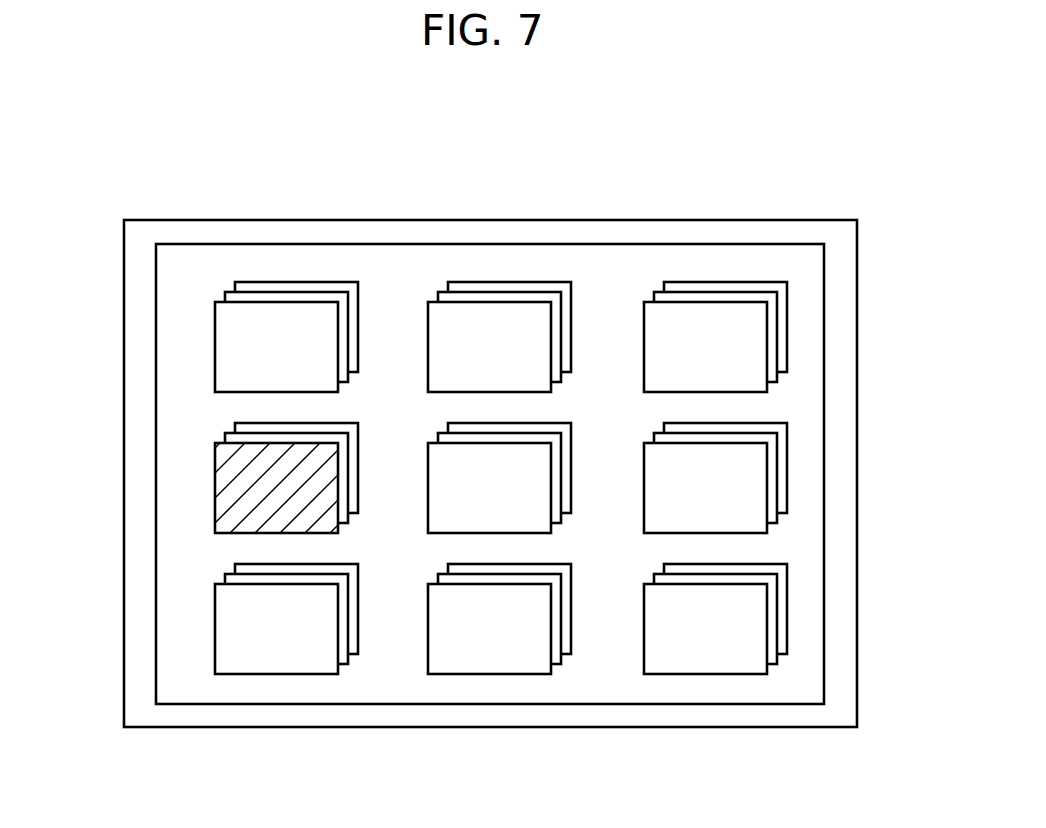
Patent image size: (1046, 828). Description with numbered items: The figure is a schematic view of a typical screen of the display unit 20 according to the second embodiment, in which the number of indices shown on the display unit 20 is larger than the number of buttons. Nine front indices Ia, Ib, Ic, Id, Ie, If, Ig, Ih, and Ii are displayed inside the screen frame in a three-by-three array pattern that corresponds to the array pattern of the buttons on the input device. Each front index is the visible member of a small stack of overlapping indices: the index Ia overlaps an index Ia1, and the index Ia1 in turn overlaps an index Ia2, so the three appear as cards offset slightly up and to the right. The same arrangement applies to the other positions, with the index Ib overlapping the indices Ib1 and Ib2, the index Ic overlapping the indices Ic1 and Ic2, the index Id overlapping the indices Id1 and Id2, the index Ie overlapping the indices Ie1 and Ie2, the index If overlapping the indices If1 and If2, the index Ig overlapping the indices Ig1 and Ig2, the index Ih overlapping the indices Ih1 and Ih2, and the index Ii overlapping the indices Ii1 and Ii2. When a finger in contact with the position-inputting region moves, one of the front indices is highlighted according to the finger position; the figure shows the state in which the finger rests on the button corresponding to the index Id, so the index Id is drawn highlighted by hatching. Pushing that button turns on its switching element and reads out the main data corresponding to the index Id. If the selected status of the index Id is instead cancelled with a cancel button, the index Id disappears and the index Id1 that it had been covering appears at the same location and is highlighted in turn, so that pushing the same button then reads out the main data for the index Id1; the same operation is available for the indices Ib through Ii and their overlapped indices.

The display unit 20 is at (866, 204).
The index Ia is at (247, 312).
The index Ia1 is at (283, 295).
The index Ia2 is at (320, 285).
The index Ib is at (458, 312).
The index Ib1 is at (497, 295).
The index Ib2 is at (534, 285).
The index Ic is at (675, 312).
The index Ic1 is at (713, 295).
The index Ic2 is at (750, 285).
The index Id is at (230, 475).
The index Id1 is at (232, 440).
The index Id2 is at (248, 427).
The index Ie is at (434, 512).
The index Ie1 is at (556, 495).
The index Ie2 is at (553, 429).
The index If is at (755, 498).
The index If1 is at (770, 462).
The index If2 is at (778, 440).
The index Ig is at (288, 666).
The index Ig1 is at (345, 665).
The index Ig2 is at (352, 632).
The index Ih is at (500, 666).
The index Ih1 is at (556, 664).
The index Ih2 is at (565, 632).
The index Ii is at (716, 666).
The index Ii1 is at (770, 664).
The index Ii2 is at (781, 632).